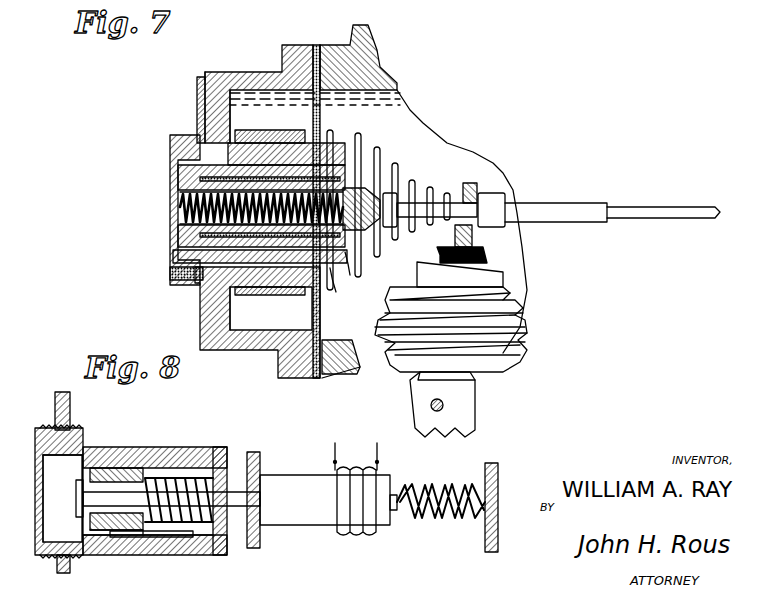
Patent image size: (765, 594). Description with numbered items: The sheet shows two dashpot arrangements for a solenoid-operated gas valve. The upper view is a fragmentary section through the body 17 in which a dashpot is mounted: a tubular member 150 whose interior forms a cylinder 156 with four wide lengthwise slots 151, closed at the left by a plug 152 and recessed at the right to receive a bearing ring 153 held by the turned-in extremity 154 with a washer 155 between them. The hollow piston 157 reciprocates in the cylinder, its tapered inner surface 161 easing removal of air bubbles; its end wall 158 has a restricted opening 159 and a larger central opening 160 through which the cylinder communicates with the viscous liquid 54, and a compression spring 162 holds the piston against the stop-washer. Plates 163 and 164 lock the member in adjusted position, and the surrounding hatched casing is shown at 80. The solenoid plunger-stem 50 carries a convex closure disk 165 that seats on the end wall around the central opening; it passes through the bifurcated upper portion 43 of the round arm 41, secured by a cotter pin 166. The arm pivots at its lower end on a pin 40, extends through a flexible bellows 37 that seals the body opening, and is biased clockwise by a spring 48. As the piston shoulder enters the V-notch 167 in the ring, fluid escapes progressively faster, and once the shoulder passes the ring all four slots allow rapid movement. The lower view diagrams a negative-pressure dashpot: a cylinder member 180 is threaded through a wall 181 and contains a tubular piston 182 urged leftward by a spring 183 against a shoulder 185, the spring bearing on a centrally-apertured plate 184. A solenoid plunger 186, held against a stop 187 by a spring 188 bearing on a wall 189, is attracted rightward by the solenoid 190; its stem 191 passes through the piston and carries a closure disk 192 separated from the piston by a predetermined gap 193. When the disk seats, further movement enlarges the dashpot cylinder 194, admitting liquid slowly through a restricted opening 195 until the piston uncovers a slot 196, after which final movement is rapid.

In FIG. 7, the housing 80 is at (258, 80).
In FIG. 7, the plate 164 is at (208, 72).
In FIG. 7, the plate 163 is at (197, 110).
In FIG. 7, the viscous liquid 54 is at (392, 88).
In FIG. 7, the tubular member 150 is at (171, 157).
In FIG. 7, the cylinder 156 is at (215, 187).
In FIG. 7, the plug 152 is at (176, 247).
In FIG. 7, the compression spring 162 is at (178, 222).
In FIG. 7, the end wall 158 is at (388, 228).
In FIG. 7, the V-notch 167 is at (335, 130).
In FIG. 7, the piston 157 is at (290, 256).
In FIG. 7, the restricted opening 159 is at (380, 168).
In FIG. 7, the central opening 160 is at (398, 185).
In FIG. 7, the closure disk 165 is at (415, 186).
In FIG. 7, the washer 155 is at (365, 248).
In FIG. 7, the turned-in extremity 154 is at (350, 275).
In FIG. 7, the ring 153 is at (330, 268).
In FIG. 7, the upper portion of pivoted arm 43 is at (485, 193).
In FIG. 7, the cotter pin 166 is at (478, 190).
In FIG. 7, the solenoid plunger-stem 50 is at (558, 207).
In FIG. 7, the flexible bellows 37 is at (520, 333).
In FIG. 7, the round arm 41 is at (475, 385).
In FIG. 7, the pin 40 is at (440, 415).
In FIG. 7, the body 17 is at (340, 378).
In FIG. 7, the slots 151 is at (255, 256).
In FIG. 7, the spring 48 is at (270, 175).
In FIG. 7, the tapered inner surface 161 is at (272, 256).
In FIG. 8, the wall 181 is at (72, 556).
In FIG. 8, the dashpot cylinder 194 is at (38, 540).
In FIG. 8, the centrally-apertured plate 184 is at (228, 449).
In FIG. 8, the tubular piston 182 is at (135, 470).
In FIG. 8, the dashpot cylinder member 180 is at (178, 475).
In FIG. 8, the stem 191 is at (232, 520).
In FIG. 8, the gap 193 is at (76, 486).
In FIG. 8, the closure disk 192 is at (77, 508).
In FIG. 8, the shoulder 185 is at (62, 463).
In FIG. 8, the restricted opening 195 is at (105, 540).
In FIG. 8, the slot 196 is at (165, 538).
In FIG. 8, the spring 183 is at (203, 545).
In FIG. 8, the stop 187 is at (262, 458).
In FIG. 8, the plunger 186 is at (300, 487).
In FIG. 8, the solenoid 190 is at (362, 532).
In FIG. 8, the spring 188 is at (425, 510).
In FIG. 8, the wall 189 is at (497, 480).